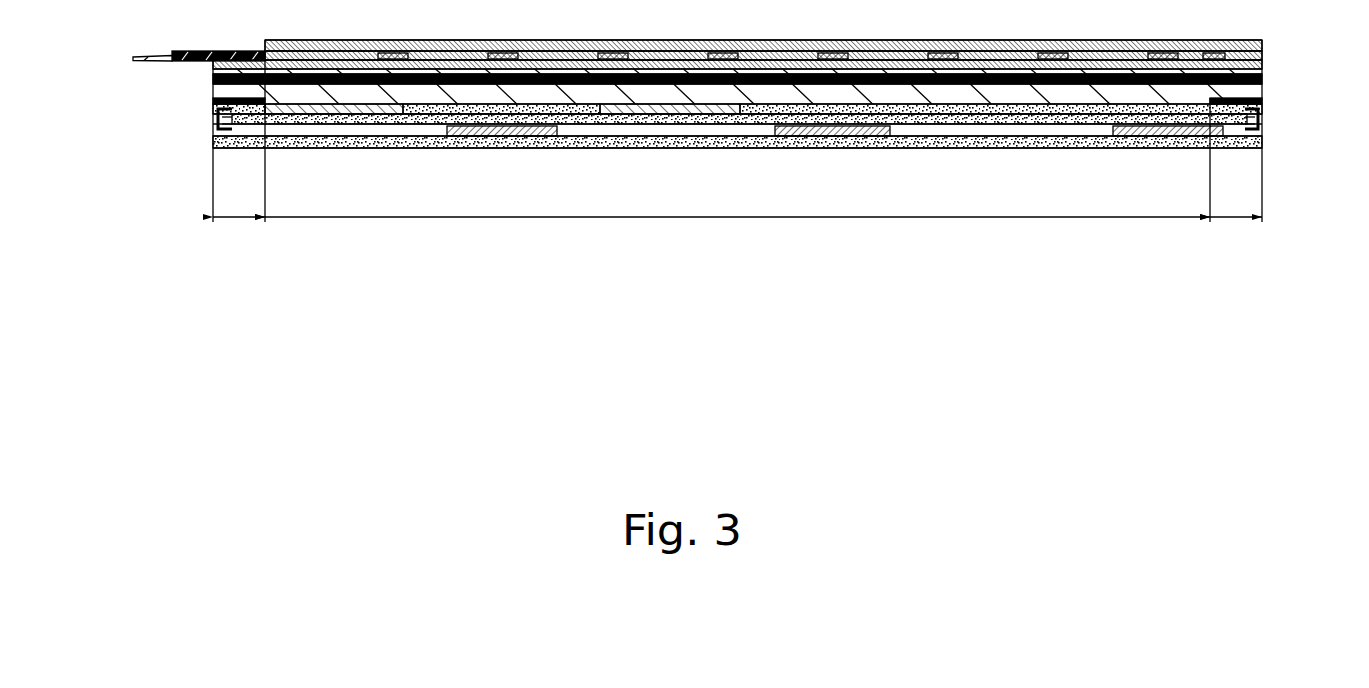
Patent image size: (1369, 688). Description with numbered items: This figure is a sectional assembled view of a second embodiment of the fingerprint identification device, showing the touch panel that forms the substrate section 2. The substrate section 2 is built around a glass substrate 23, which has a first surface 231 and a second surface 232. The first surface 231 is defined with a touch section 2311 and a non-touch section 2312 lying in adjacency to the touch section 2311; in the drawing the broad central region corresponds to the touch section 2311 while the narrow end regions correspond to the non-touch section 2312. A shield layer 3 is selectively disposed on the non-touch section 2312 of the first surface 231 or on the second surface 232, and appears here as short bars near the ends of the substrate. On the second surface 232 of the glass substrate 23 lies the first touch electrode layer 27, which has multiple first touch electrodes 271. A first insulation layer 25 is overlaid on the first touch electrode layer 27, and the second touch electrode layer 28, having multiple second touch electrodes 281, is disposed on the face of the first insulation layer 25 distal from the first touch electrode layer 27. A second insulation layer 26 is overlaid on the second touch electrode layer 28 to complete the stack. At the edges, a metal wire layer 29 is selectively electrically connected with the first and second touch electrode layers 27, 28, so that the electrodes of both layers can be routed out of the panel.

The substrate section 2 is at (1300, 302).
The glass substrate 23 is at (1327, 61).
The first surface 231 is at (1262, 85).
The second surface 232 is at (1210, 99).
The touch section 2311 is at (712, 212).
The non-touch section 2312 is at (247, 202).
The first insulation layer 25 is at (377, 115).
The second insulation layer 26 is at (756, 140).
The first touch electrode layer 27 is at (657, 257).
The first touch electrodes 271 is at (403, 118).
The second touch electrode layer 28 is at (1110, 273).
The second touch electrodes 281 is at (828, 136).
The metal wire layer 29 is at (218, 112).
The shield layer 3 is at (213, 104).